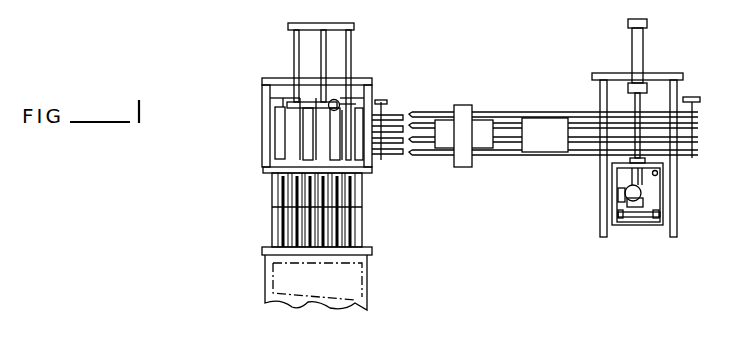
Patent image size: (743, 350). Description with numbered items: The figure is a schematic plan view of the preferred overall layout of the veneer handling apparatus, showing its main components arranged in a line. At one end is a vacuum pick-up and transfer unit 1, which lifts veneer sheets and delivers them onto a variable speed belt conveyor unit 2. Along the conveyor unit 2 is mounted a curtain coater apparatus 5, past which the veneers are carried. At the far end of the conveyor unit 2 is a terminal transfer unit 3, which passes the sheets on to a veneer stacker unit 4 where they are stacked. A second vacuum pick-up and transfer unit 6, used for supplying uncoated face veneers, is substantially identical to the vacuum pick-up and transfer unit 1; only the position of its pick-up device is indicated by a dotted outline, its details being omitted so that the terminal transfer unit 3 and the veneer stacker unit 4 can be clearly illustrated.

The vacuum pick-up and transfer unit 1 is at (630, 240).
The variable speed belt conveyor unit 2 is at (522, 110).
The terminal transfer unit 3 is at (256, 122).
The veneer stacker unit 4 is at (364, 229).
The curtain coater apparatus 5 is at (465, 105).
The second vacuum pick-up and transfer unit 6 is at (355, 303).